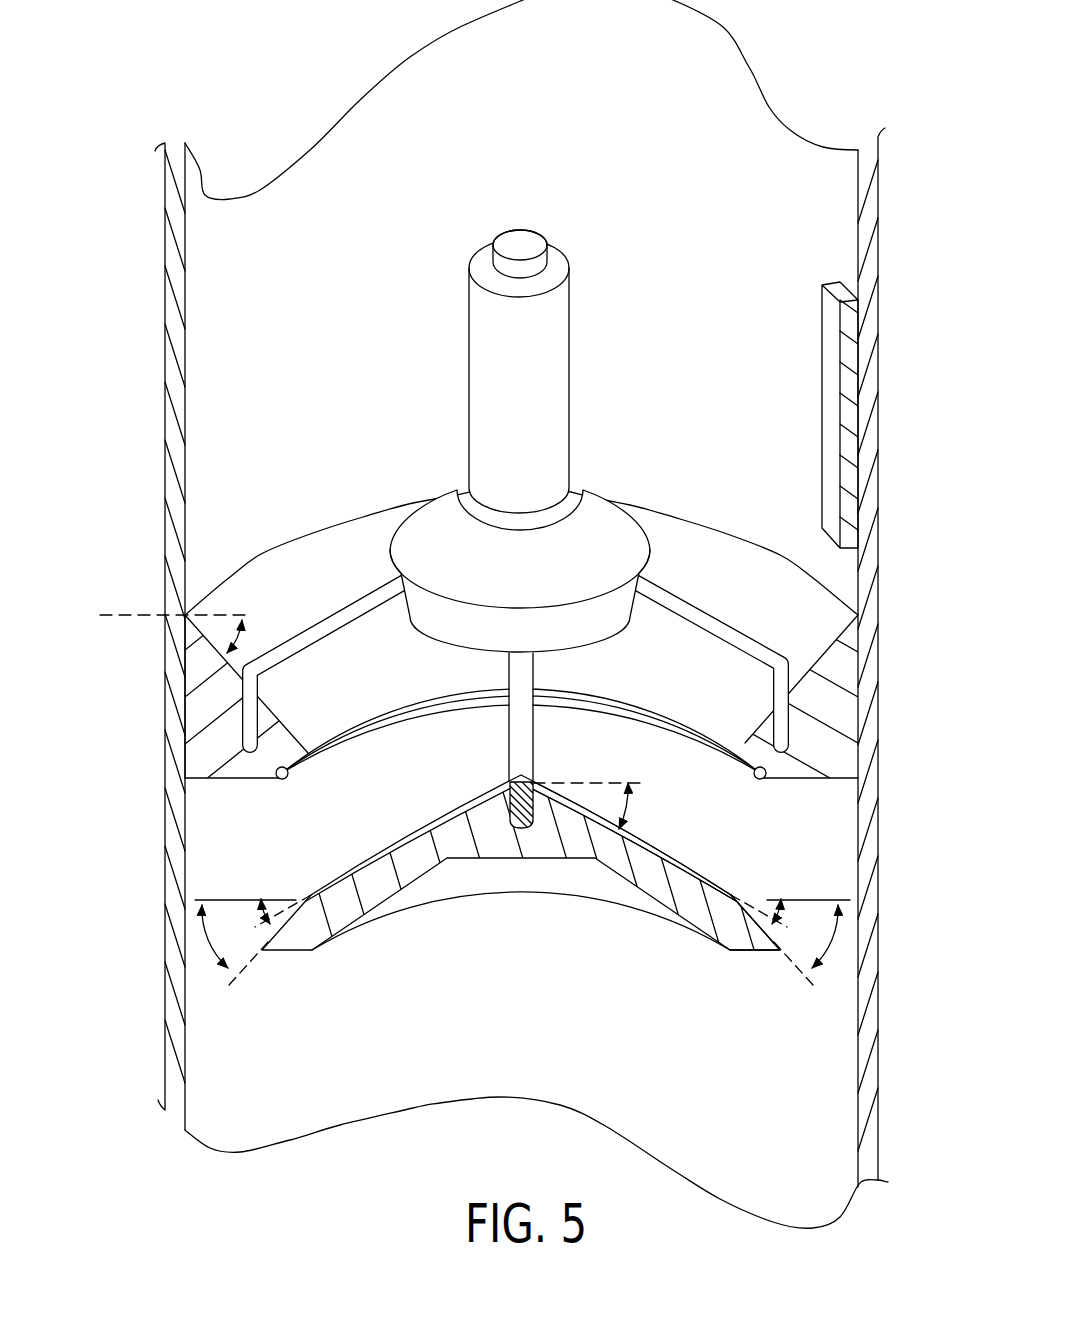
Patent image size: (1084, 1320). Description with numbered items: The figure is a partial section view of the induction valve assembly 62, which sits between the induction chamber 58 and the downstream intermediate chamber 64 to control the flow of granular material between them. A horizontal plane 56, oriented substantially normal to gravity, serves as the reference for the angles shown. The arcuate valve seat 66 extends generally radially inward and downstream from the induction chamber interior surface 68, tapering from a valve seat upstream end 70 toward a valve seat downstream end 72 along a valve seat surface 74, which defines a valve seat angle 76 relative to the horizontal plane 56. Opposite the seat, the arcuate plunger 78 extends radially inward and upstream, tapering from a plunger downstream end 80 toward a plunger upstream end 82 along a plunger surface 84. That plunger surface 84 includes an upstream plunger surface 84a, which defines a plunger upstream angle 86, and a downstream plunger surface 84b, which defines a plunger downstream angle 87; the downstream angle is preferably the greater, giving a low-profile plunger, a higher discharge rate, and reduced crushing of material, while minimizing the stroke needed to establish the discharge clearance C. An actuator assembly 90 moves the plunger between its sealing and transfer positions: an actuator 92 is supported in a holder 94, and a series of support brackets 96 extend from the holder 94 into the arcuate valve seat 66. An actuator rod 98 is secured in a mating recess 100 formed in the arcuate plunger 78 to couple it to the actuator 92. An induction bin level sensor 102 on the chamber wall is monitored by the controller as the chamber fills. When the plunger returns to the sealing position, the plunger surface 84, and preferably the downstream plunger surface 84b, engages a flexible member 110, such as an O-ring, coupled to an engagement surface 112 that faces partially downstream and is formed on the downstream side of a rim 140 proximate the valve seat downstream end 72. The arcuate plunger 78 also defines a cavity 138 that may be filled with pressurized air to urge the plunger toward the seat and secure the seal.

The horizontal plane 56 is at (125, 624).
The induction chamber 58 is at (250, 364).
The induction valve assembly 62 is at (340, 472).
The intermediate chamber 64 is at (245, 868).
The arcuate valve seat 66 is at (261, 545).
The induction chamber interior surface 68 is at (187, 273).
The valve seat upstream end 70 is at (859, 613).
The valve seat downstream end 72 is at (860, 779).
The valve seat surface 74 is at (391, 677).
The valve seat angle 76 is at (246, 638).
The arcuate plunger 78 is at (398, 916).
The plunger downstream end 80 is at (262, 952).
The plunger upstream end 82 is at (482, 792).
The plunger surface 84 is at (393, 835).
The upstream plunger surface 84a is at (644, 837).
The downstream plunger surface 84b is at (782, 893).
The plunger upstream angle 86 is at (630, 808).
The plunger downstream angle 87 is at (523, 962).
The actuator assembly 90 is at (385, 375).
The actuator 92 is at (570, 311).
The holder 94 is at (604, 498).
The support brackets 96 is at (347, 600).
The actuator rod 98 is at (535, 672).
The mating recess 100 is at (497, 828).
The induction bin level sensor 102 is at (822, 298).
The flexible member 110 is at (282, 780).
The engagement surface 112 is at (298, 752).
The cavity 138 is at (589, 880).
The rim 140 is at (700, 720).
The discharge clearance C is at (760, 818).